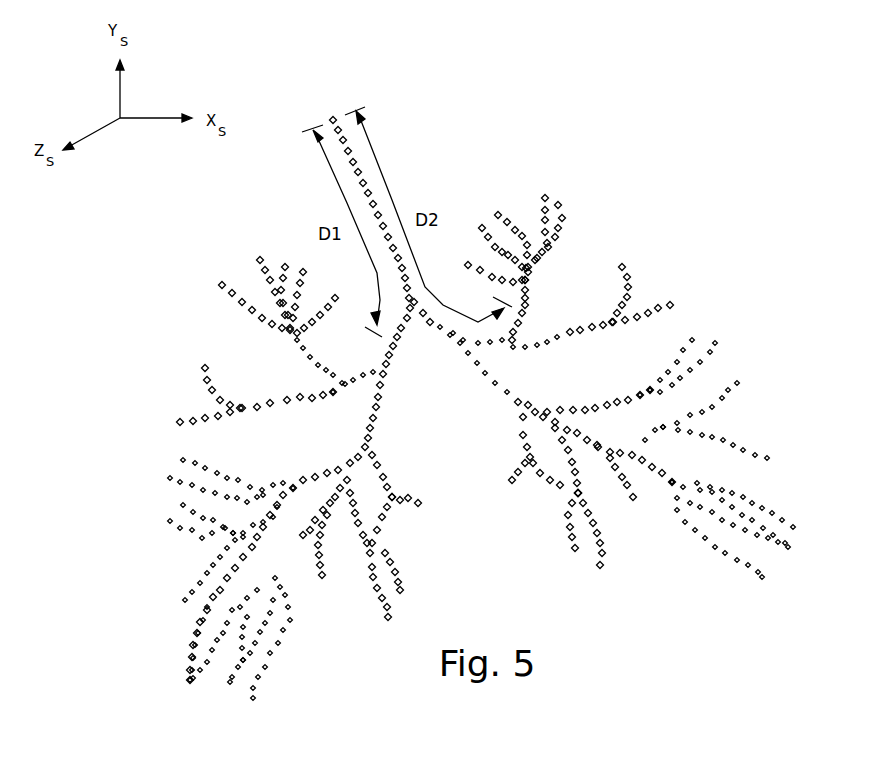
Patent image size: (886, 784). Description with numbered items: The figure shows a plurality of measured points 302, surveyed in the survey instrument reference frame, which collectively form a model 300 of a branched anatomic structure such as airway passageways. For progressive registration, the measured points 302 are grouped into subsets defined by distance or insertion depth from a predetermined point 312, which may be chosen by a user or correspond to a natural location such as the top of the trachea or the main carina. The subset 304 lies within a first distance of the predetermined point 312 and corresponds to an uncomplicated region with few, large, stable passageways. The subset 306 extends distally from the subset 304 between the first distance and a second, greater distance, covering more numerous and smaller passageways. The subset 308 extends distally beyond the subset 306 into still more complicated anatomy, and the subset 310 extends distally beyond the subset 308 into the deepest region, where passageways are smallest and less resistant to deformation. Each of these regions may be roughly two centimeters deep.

The model 300 is at (718, 228).
The measured points 302 is at (222, 285).
The subset 304 is at (432, 327).
The subset 306 is at (333, 394).
The subset 308 is at (560, 206).
The subset 310 is at (716, 343).
The predetermined point 312 is at (330, 119).